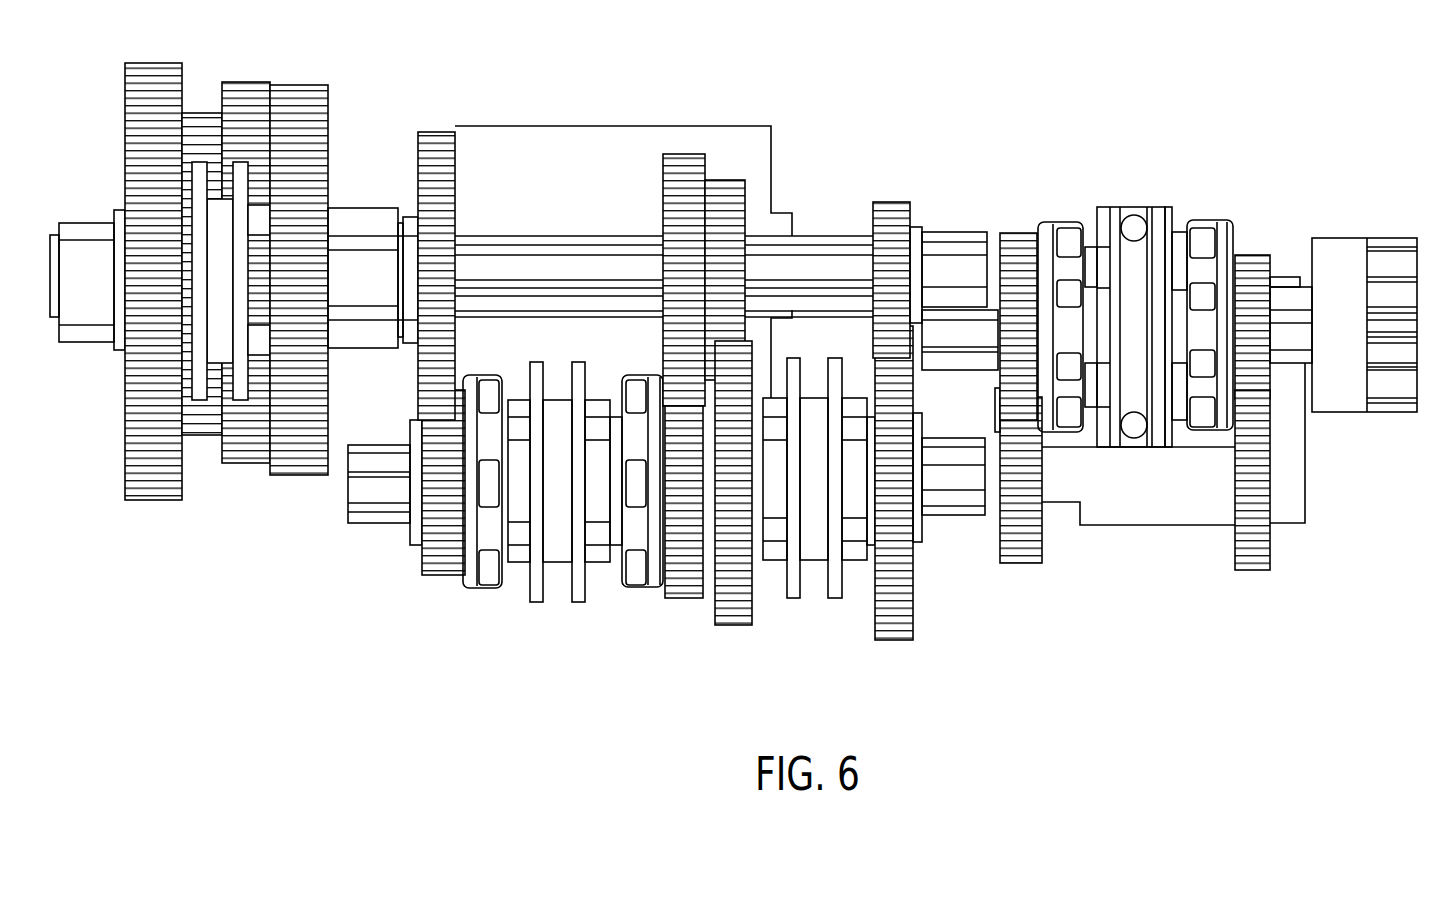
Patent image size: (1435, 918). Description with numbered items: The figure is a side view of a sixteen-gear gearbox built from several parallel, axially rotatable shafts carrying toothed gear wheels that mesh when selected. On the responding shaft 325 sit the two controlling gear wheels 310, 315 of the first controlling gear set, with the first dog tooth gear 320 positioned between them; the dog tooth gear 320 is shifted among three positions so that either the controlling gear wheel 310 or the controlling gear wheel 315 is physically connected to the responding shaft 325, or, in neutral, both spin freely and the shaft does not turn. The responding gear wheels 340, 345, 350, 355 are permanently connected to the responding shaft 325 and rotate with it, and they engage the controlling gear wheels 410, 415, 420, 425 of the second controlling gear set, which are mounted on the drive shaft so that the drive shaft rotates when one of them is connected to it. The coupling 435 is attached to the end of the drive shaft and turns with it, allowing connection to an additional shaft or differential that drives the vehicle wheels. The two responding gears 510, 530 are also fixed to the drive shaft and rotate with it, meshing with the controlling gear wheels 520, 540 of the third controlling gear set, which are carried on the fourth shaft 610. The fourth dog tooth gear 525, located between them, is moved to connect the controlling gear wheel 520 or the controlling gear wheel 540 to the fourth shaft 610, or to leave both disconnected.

The first controlling gear wheel 310 is at (150, 482).
The second controlling gear wheel 315 is at (295, 450).
The first dog tooth gear 320 is at (217, 215).
The responding shaft 325 is at (945, 262).
The responding gear wheel 340 is at (432, 143).
The responding gear wheel 345 is at (683, 167).
The responding gear wheel 350 is at (725, 187).
The responding gear wheel 355 is at (888, 230).
The controlling gear wheel 410 is at (443, 560).
The controlling gear wheel 415 is at (690, 585).
The controlling gear wheel 420 is at (737, 608).
The controlling gear wheel 425 is at (895, 638).
The coupling 435 is at (1390, 258).
The responding gear 510 is at (1028, 538).
The controlling gear wheel 520 is at (1017, 248).
The fourth dog tooth gear 525 is at (1130, 250).
The responding gear 530 is at (1252, 558).
The controlling gear wheel 540 is at (1250, 267).
The fourth shaft 610 is at (1290, 338).